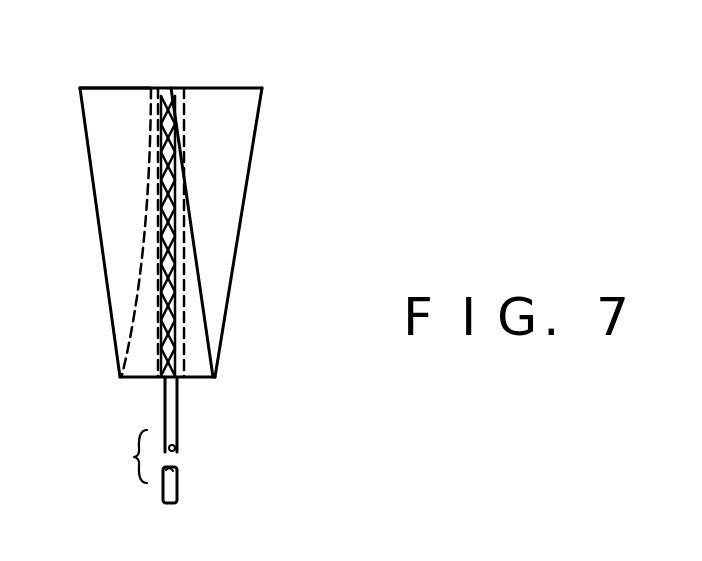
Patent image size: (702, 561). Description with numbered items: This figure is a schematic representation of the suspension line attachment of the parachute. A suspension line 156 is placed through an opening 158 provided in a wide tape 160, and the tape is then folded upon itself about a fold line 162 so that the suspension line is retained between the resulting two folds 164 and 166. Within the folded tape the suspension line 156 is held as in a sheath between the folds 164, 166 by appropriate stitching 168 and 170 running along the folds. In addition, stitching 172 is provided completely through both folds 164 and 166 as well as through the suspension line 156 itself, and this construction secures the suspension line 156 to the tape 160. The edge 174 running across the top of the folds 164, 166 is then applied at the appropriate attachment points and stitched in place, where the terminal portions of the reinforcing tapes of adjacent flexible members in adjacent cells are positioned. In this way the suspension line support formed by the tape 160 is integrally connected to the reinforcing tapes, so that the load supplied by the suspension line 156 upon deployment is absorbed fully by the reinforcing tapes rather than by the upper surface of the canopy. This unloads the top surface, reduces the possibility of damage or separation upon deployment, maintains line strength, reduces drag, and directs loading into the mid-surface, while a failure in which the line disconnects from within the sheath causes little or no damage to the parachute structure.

The suspension line 156 is at (176, 435).
The opening 158 is at (160, 380).
The wide tape 160 is at (247, 103).
The fold line 162 is at (205, 378).
The fold 164 is at (240, 193).
The fold 166 is at (103, 203).
The stitching 168 is at (184, 275).
The stitching 170 is at (152, 279).
The stitching 172 is at (165, 87).
The edge 174 is at (102, 87).